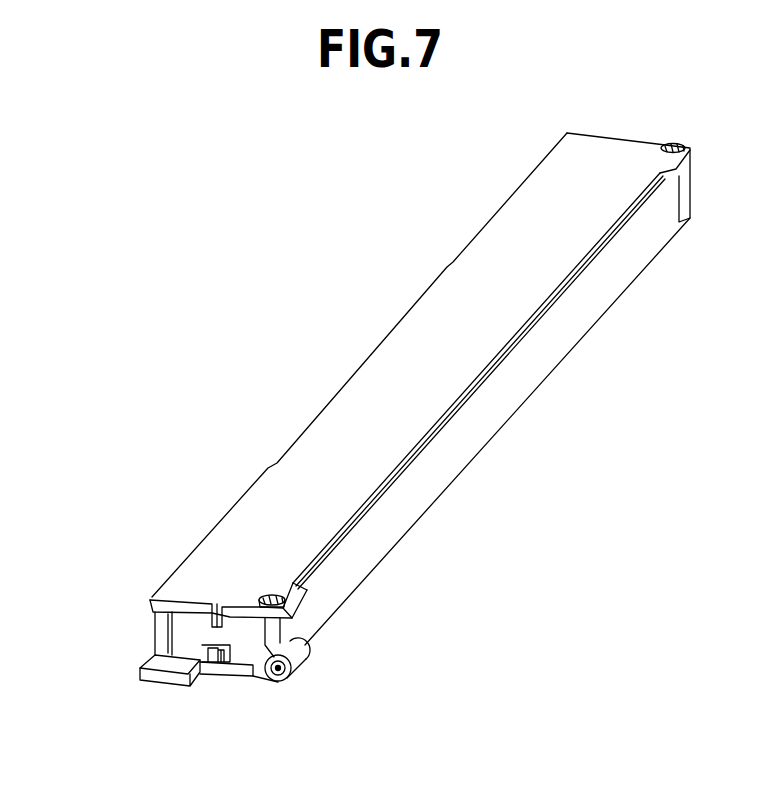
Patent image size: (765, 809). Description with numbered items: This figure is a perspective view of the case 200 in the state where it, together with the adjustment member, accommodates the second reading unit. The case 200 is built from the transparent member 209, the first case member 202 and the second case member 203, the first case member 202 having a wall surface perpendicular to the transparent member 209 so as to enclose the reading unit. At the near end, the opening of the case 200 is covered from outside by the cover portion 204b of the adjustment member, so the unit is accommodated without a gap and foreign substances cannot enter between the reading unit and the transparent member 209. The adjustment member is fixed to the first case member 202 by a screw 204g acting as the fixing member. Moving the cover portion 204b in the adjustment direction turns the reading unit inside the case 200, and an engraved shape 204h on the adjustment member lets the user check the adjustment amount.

The case 200 is at (357, 278).
The first case member 202 is at (423, 482).
The second case member 203 is at (363, 392).
The transparent member 209 is at (388, 557).
The cover portion 204b is at (183, 633).
The screw 204g is at (300, 668).
The engraved shape 204h is at (220, 673).